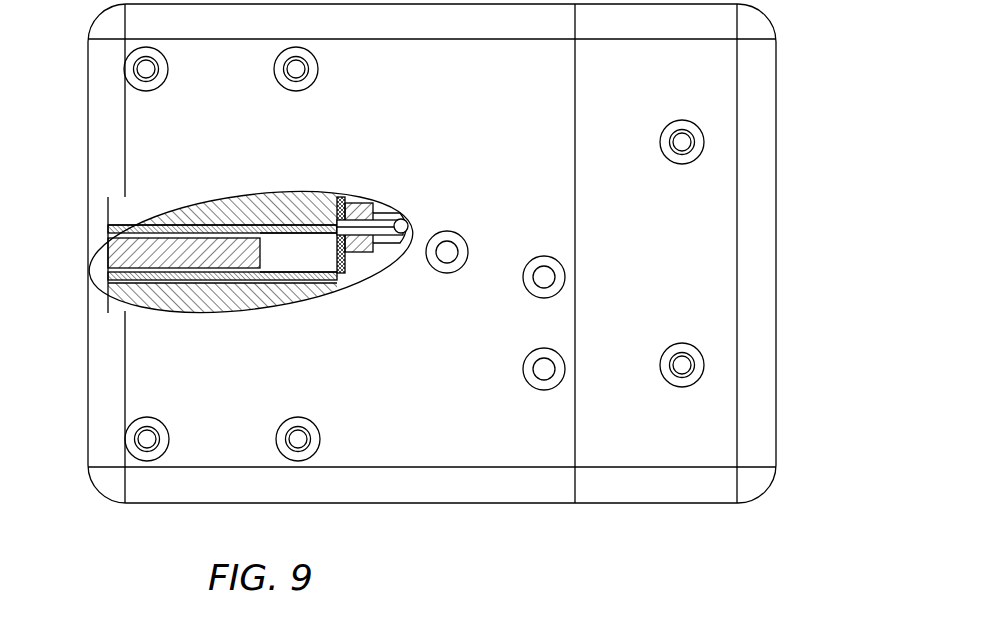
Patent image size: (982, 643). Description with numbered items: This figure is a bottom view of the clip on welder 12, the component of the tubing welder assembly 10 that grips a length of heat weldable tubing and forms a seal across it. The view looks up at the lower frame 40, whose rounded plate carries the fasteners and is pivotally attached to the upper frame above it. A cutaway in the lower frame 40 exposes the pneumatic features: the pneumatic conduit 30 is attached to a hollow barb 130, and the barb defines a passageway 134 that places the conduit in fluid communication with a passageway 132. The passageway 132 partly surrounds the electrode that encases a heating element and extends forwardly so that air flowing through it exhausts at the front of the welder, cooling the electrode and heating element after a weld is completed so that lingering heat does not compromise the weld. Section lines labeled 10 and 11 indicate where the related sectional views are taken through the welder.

The tubing welder assembly 10 is at (228, 145).
The section line 11- 11 is at (598, 289).
The clip on welder 12 is at (512, 549).
The pneumatic conduit 30 is at (387, 208).
The lower frame 40 is at (433, 410).
The hollow barb 130 is at (357, 210).
The passageway 132 is at (285, 226).
The passageway 134 is at (410, 226).